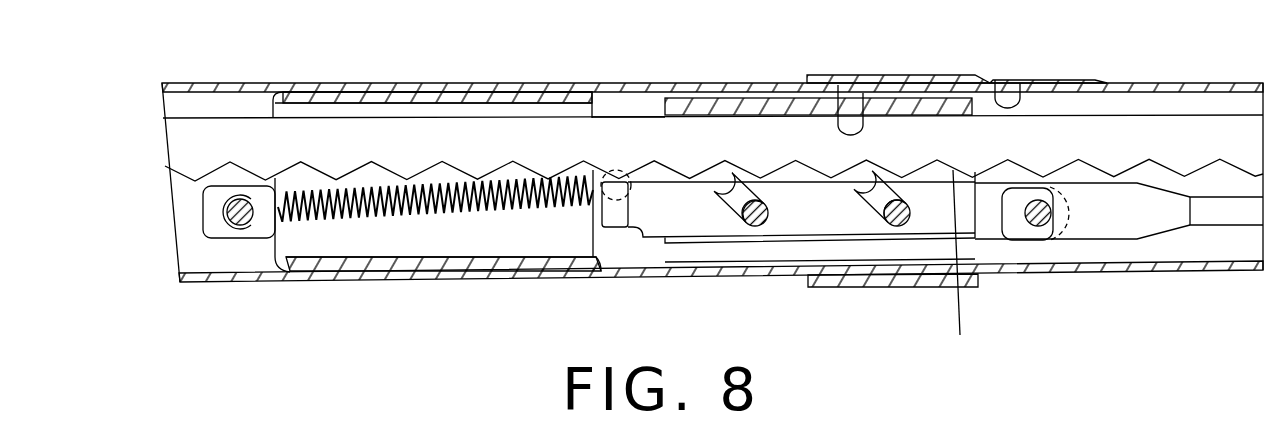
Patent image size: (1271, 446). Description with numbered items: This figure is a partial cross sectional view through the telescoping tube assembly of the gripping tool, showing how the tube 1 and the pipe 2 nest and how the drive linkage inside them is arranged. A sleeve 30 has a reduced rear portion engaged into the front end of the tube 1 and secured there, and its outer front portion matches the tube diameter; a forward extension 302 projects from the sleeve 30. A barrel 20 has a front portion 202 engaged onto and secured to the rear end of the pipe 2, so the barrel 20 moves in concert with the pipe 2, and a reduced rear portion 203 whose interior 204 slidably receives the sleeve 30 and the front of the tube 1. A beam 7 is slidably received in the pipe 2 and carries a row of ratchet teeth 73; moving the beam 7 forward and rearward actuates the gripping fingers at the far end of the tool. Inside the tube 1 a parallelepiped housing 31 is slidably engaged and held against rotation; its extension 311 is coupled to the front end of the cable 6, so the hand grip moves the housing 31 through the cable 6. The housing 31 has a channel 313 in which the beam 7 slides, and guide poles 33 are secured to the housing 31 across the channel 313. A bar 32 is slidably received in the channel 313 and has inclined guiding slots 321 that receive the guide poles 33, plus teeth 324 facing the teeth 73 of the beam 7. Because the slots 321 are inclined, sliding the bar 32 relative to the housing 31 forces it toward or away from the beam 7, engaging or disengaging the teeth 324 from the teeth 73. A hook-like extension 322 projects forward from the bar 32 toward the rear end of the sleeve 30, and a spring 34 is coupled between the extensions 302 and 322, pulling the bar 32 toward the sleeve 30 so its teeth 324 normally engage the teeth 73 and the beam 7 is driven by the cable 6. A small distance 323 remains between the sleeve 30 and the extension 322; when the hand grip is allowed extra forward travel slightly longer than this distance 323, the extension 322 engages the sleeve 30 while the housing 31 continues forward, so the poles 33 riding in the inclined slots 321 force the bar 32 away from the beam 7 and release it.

The tube 1 is at (1173, 85).
The pipe 2 is at (498, 92).
The cable 6 is at (1133, 230).
The beam 7 is at (692, 137).
The barrel 20 is at (975, 158).
The sleeve 30 is at (428, 100).
The housing 31 is at (843, 181).
The bar 32 is at (678, 220).
The guide poles 33 is at (755, 226).
The spring 34 is at (430, 213).
The teeth 73 is at (1177, 167).
The front portion of barrel 202 is at (896, 75).
The rear portion of barrel 203 is at (1090, 80).
The interior of rear portion 204 is at (992, 82).
The extension of sleeve 302 is at (222, 232).
The extension of housing 311 is at (987, 228).
The channel 313 is at (838, 85).
The guiding slots 321 is at (727, 180).
The extension of bar 322 is at (613, 221).
The distance 323 is at (600, 170).
The teeth of bar 324 is at (963, 265).